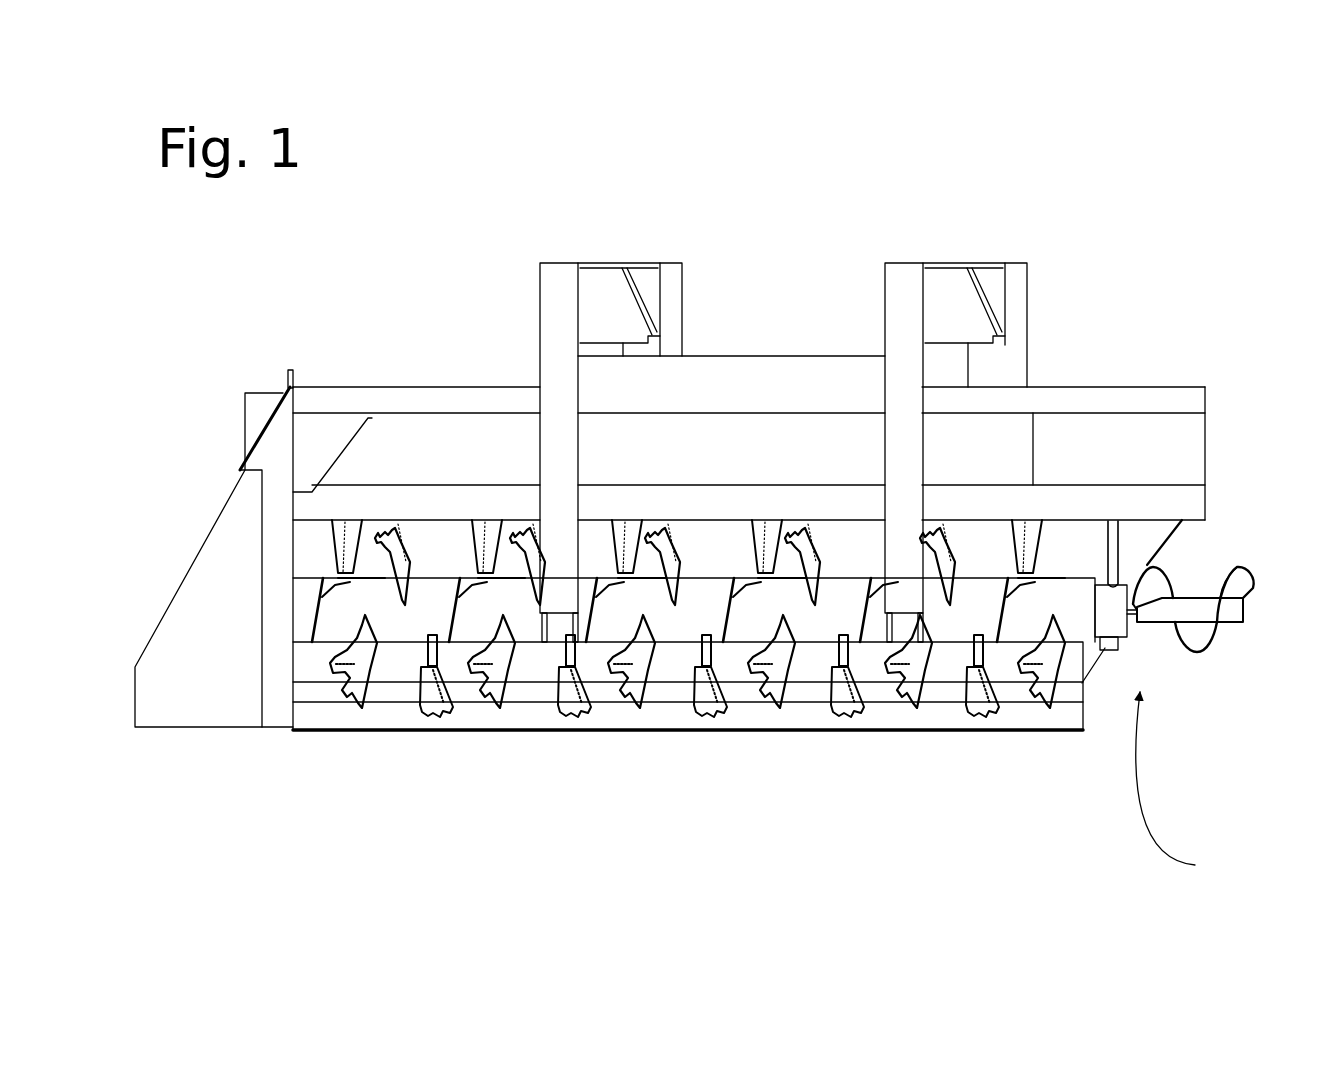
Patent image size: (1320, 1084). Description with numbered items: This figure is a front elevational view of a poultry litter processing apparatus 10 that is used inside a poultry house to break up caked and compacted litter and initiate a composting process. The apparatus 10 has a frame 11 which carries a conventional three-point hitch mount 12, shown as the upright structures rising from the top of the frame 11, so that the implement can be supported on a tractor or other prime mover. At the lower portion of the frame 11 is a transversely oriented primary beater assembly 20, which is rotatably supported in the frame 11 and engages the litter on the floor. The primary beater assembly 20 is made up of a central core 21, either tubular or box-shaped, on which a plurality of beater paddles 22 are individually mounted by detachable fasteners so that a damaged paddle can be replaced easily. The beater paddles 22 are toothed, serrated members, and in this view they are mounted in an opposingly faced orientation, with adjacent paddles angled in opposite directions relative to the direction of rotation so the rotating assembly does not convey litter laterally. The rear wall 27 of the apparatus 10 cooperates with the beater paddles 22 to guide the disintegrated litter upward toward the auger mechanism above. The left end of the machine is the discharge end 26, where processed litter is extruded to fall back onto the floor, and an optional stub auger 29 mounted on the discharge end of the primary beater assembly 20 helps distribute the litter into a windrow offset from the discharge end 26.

The poultry litter processing apparatus 10 is at (1100, 308).
The frame 11 is at (467, 387).
The three-point hitch mount 12 is at (597, 285).
The primary beater assembly 20 is at (468, 740).
The central core 21 is at (692, 628).
The beater paddles 22 is at (397, 555).
The discharge end 26 is at (1187, 786).
The rear wall 27 is at (1150, 545).
The stub auger 29 is at (1200, 652).